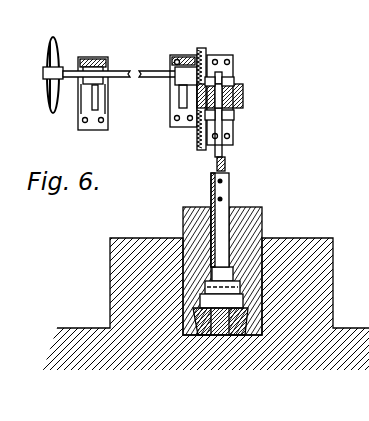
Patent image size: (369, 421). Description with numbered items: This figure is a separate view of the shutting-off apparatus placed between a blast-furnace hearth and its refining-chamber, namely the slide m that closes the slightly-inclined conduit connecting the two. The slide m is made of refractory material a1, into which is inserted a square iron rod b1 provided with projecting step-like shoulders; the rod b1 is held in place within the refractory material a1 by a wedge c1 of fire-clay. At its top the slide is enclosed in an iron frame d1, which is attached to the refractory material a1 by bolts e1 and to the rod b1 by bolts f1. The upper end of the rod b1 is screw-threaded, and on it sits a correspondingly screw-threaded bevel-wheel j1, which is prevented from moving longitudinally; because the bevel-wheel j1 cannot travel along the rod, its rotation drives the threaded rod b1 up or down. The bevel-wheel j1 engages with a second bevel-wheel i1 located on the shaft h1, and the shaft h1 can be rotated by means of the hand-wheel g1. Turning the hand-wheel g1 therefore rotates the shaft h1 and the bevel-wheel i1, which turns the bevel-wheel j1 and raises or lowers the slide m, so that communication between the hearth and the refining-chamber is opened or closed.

The refractory material a1 is at (206, 293).
The square iron rod b1 is at (212, 210).
The wedge c1 is at (227, 354).
The iron frame d1 is at (265, 266).
The bolts e1 is at (193, 228).
The bolts f1 is at (229, 199).
The hand-wheel g1 is at (54, 104).
The shaft h1 is at (131, 80).
The bevel-wheel i1 is at (204, 50).
The bevel-wheel j1 is at (243, 100).
The slide m is at (213, 163).